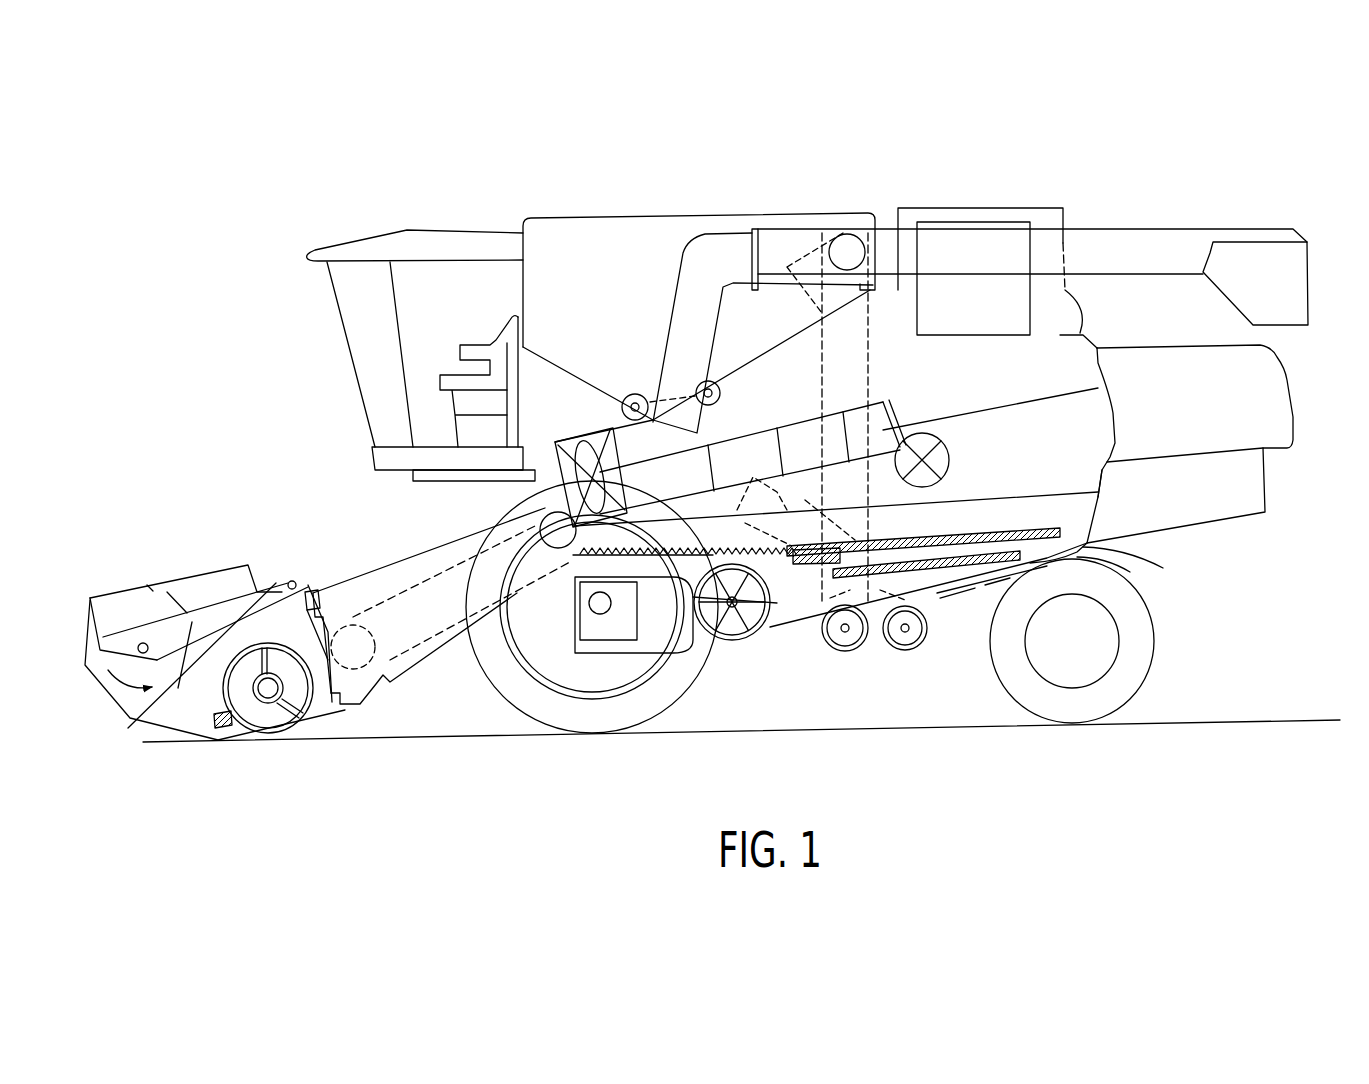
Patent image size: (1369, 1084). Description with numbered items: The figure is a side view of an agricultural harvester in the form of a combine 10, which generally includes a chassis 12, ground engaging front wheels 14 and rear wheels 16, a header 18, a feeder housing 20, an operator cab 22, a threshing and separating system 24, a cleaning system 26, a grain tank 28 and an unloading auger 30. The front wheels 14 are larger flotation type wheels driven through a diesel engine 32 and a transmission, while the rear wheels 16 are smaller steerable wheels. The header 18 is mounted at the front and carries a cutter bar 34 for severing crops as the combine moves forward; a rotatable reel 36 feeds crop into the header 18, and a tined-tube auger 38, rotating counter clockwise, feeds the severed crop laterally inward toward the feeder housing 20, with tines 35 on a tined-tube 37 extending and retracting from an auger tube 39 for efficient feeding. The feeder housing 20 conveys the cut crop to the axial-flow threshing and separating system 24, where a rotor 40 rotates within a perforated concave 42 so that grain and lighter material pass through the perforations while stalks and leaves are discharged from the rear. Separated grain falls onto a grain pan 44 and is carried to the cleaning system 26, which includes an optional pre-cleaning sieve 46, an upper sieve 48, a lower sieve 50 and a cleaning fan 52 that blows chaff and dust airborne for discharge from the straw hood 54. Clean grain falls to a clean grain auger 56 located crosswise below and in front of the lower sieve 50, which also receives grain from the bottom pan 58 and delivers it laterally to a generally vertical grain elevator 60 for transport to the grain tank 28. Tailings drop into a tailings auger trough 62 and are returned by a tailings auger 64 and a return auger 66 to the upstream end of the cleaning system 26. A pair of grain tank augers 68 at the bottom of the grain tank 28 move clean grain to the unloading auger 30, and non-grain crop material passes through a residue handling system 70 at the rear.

The combine 10 is at (397, 218).
The chassis 12 is at (1117, 552).
The front wheels 14 is at (512, 700).
The rear wheels 16 is at (1147, 657).
The header 18 is at (173, 560).
The feeder housing 20 is at (383, 567).
The operator cab 22 is at (345, 333).
The threshing and separating system 24 is at (493, 497).
The cleaning system 26 is at (803, 640).
The grain tank 28 is at (570, 227).
The unloading auger 30 is at (1160, 243).
The diesel engine 32 is at (953, 210).
The cutter bar 34 is at (160, 747).
The tines 35 is at (233, 728).
The rotatable reel 36 is at (90, 642).
The tined-tube 37 is at (267, 672).
The tined-tube auger 38 is at (263, 740).
The auger tube 39 is at (308, 656).
The rotor 40 is at (563, 440).
The perforated concave 42 is at (767, 420).
The grain pan 44 is at (573, 574).
The pre-cleaning sieve 46 is at (883, 537).
The upper sieve 48 is at (980, 542).
The lower sieve 50 is at (972, 516).
The cleaning fan 52 is at (735, 628).
The straw hood 54 is at (1267, 380).
The clean grain auger 56 is at (853, 657).
The bottom pan 58 is at (990, 587).
The grain elevator 60 is at (873, 337).
The tailings auger trough 62 is at (957, 600).
The tailings auger 64 is at (913, 655).
The return auger 66 is at (782, 516).
The grain tank augers 68 is at (627, 393).
The residue handling system 70 is at (1222, 527).